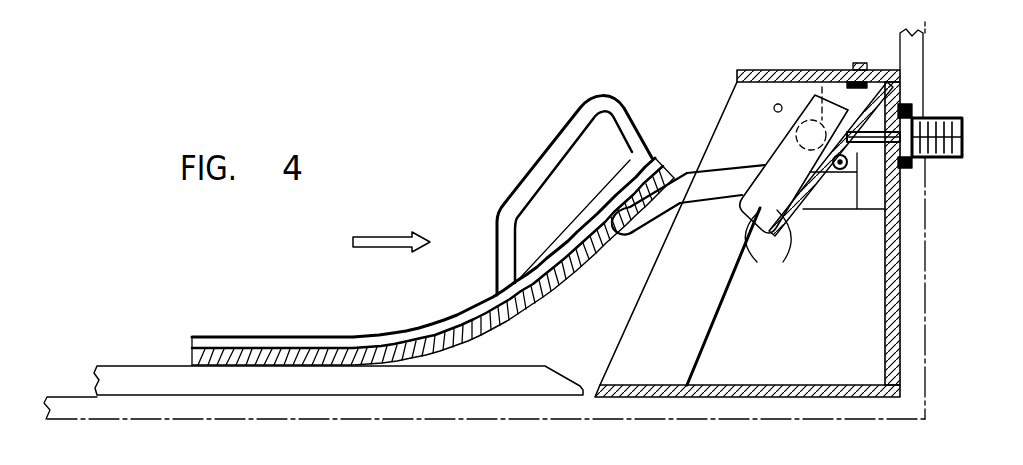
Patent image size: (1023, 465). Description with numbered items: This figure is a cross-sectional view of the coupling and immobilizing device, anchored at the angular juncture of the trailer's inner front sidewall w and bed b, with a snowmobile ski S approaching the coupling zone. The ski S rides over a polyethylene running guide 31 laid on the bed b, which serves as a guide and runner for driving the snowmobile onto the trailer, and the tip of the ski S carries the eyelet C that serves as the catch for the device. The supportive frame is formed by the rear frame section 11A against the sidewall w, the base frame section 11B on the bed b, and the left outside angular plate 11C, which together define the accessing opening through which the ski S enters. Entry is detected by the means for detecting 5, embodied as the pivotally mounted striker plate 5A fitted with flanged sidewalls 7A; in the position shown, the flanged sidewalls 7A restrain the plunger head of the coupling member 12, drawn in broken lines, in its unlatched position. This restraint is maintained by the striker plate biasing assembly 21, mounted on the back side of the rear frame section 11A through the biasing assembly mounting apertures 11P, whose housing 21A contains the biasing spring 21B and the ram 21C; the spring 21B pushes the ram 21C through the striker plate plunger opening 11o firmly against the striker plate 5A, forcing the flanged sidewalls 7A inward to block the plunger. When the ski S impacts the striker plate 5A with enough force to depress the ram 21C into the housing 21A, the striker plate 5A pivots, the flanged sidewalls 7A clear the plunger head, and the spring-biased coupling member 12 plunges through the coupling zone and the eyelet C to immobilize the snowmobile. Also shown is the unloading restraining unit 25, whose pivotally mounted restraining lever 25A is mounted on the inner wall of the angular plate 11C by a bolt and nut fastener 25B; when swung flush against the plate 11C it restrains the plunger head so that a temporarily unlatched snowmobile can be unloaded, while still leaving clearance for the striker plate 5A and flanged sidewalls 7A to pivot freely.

The bed b is at (62, 418).
The running guides 31 is at (125, 366).
The snowmobile ski S is at (500, 320).
The eyelet C is at (586, 106).
The unloading restraining unit 25 is at (688, 186).
The restraining lever 25A is at (637, 222).
The bolt and nut fastener 25B is at (837, 182).
The left outside angular plate 11C is at (652, 297).
The base frame section 11B is at (792, 398).
The rear frame section 11A is at (905, 296).
The striker plate plunger opening 11o is at (878, 86).
The biasing assembly mounting apertures 11P is at (907, 178).
The inner front sidewall w is at (927, 272).
The flanged sidewalls 7A is at (752, 254).
The striker plate 5A is at (785, 240).
The means for detecting 5 is at (806, 190).
The ram 21C is at (862, 150).
The coupling member 12 is at (818, 68).
The striker plate biasing assembly 21 is at (942, 108).
The housing 21A is at (937, 153).
The biasing spring 21B is at (963, 140).